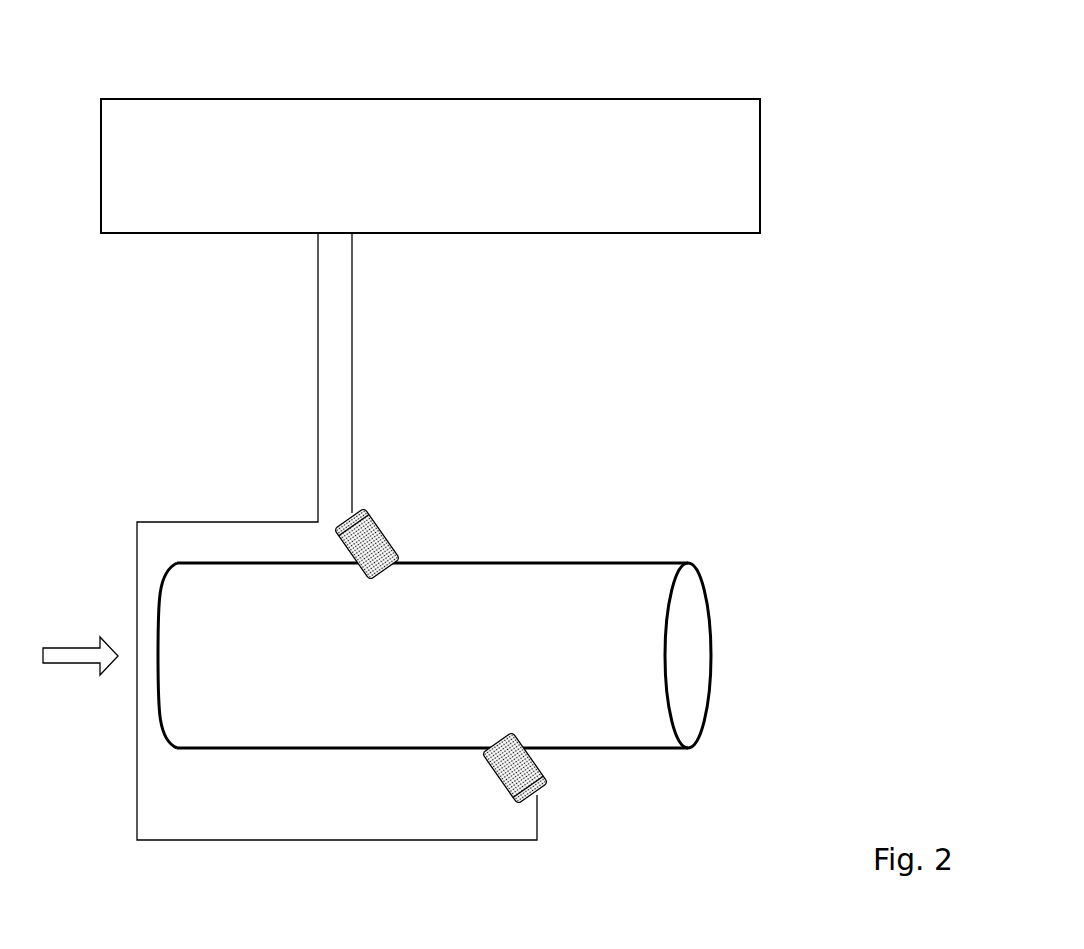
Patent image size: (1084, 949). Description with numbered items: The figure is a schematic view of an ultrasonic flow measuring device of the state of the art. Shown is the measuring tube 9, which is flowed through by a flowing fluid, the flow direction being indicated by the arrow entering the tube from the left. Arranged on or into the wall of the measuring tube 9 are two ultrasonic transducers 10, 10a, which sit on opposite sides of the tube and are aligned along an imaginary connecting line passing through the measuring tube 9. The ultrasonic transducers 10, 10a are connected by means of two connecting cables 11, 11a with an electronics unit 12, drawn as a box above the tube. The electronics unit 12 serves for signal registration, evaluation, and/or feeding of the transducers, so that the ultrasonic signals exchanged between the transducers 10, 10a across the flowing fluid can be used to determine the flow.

The measuring tube 9 is at (573, 667).
The ultrasonic transducer 10 is at (378, 524).
The ultrasonic transducer 10a is at (497, 785).
The connecting cable 11 is at (362, 390).
The connecting cable 11a is at (337, 340).
The electronics unit 12 is at (508, 82).